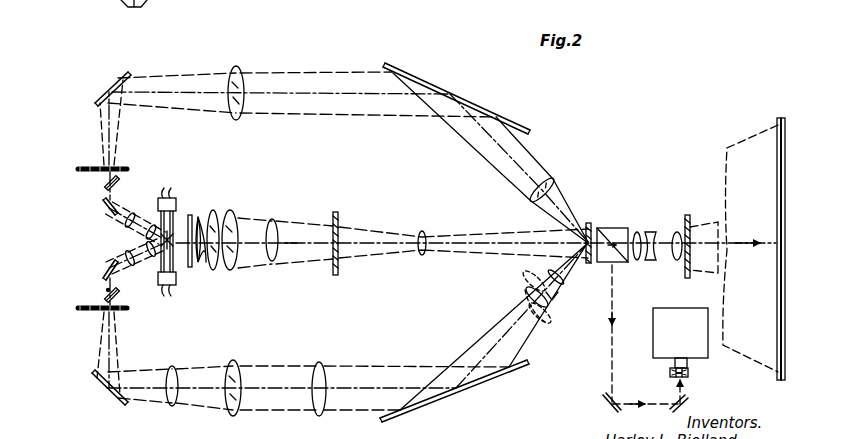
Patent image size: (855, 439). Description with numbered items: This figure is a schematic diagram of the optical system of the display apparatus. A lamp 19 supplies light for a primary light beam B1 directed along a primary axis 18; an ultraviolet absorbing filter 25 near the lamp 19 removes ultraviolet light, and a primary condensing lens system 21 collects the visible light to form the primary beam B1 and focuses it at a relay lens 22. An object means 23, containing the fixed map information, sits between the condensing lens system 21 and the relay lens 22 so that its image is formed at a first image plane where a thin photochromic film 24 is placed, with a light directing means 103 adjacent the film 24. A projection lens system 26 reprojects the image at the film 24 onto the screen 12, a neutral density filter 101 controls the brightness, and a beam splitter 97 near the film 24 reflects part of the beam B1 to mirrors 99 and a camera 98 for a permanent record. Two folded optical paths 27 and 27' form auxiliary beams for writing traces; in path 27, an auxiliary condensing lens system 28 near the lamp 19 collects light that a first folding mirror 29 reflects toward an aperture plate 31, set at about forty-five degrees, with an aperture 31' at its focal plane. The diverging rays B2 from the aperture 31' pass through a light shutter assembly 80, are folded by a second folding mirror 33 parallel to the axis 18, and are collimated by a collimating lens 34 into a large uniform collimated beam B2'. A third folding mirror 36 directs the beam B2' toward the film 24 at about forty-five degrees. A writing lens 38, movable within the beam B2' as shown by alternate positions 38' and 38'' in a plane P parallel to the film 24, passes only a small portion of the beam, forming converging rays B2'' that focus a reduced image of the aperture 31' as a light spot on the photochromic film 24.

The screen 12 is at (778, 122).
The primary axis 18 is at (305, 240).
The lamp 19 is at (160, 202).
The primary condensing lens system 21 is at (196, 208).
The relay lens 22 is at (425, 234).
The object means 23 is at (338, 222).
The photochromic film 24 is at (588, 224).
The ultraviolet absorbing filter 25 is at (190, 268).
The projection lens system 26 is at (636, 224).
The folded optical path 27 is at (68, 353).
The folded optical path 27' is at (74, 136).
The auxiliary condensing lens system 28 is at (145, 268).
The first folding mirror 29 is at (106, 265).
The aperture plate 31 is at (85, 291).
The aperture 31' is at (131, 301).
The second folding mirror 33 is at (104, 396).
The collimating lens 34 is at (233, 361).
The third folding mirror 36 is at (421, 403).
The writing lens 38 is at (517, 297).
The alternate position of writing lens 38' is at (521, 277).
The alternate position of writing lens 38'' is at (547, 322).
The light shutter assembly 80 is at (80, 309).
The beam splitter 97 is at (612, 264).
The camera 98 is at (675, 308).
The mirrors 99 is at (604, 400).
The neutral density filter 101 is at (689, 217).
The light directing means 103 is at (600, 228).
The primary light beam B1 is at (272, 262).
The auxiliary beam B2 is at (167, 402).
The collimated beam B2' is at (317, 400).
The converging light rays B2'' is at (569, 289).
The plane of lens movement P is at (552, 300).